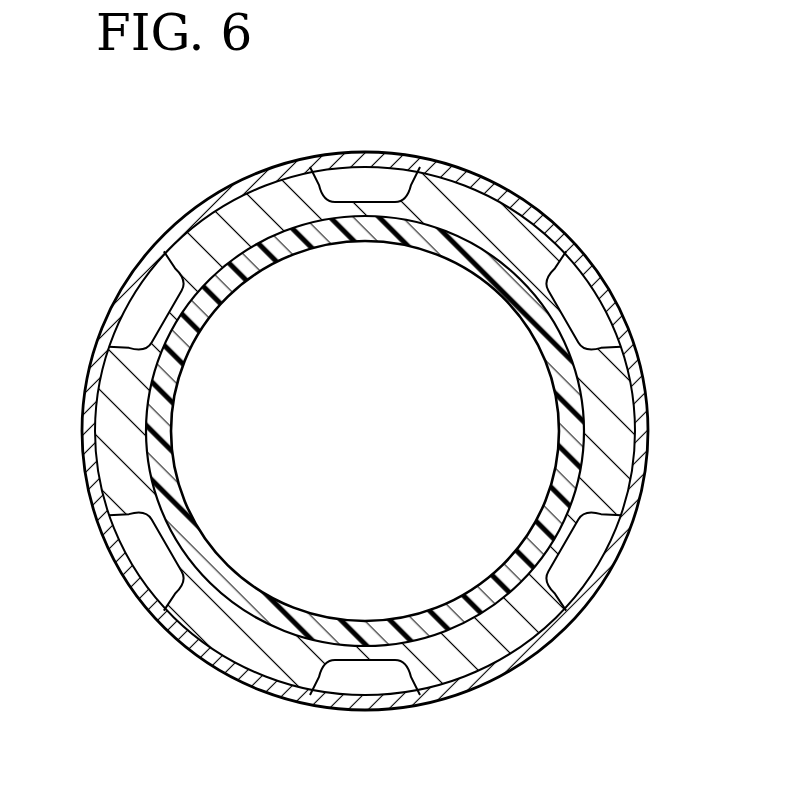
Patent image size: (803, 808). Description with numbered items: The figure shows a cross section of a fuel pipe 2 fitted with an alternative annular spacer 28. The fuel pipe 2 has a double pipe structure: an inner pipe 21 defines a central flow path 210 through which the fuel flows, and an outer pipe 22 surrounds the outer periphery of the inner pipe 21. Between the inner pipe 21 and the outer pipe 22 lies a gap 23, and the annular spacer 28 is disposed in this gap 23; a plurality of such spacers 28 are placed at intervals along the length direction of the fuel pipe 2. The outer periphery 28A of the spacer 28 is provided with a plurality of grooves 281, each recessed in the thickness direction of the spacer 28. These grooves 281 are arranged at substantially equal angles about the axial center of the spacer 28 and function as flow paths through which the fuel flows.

The fuel pipe 2 is at (540, 142).
The inner pipe 21 is at (250, 253).
The outer pipe 22 is at (445, 167).
The gap 23 is at (379, 198).
The spacer 28 is at (553, 236).
The outer periphery 28A is at (633, 413).
The groove 281 is at (140, 266).
The flow path 210 is at (386, 433).